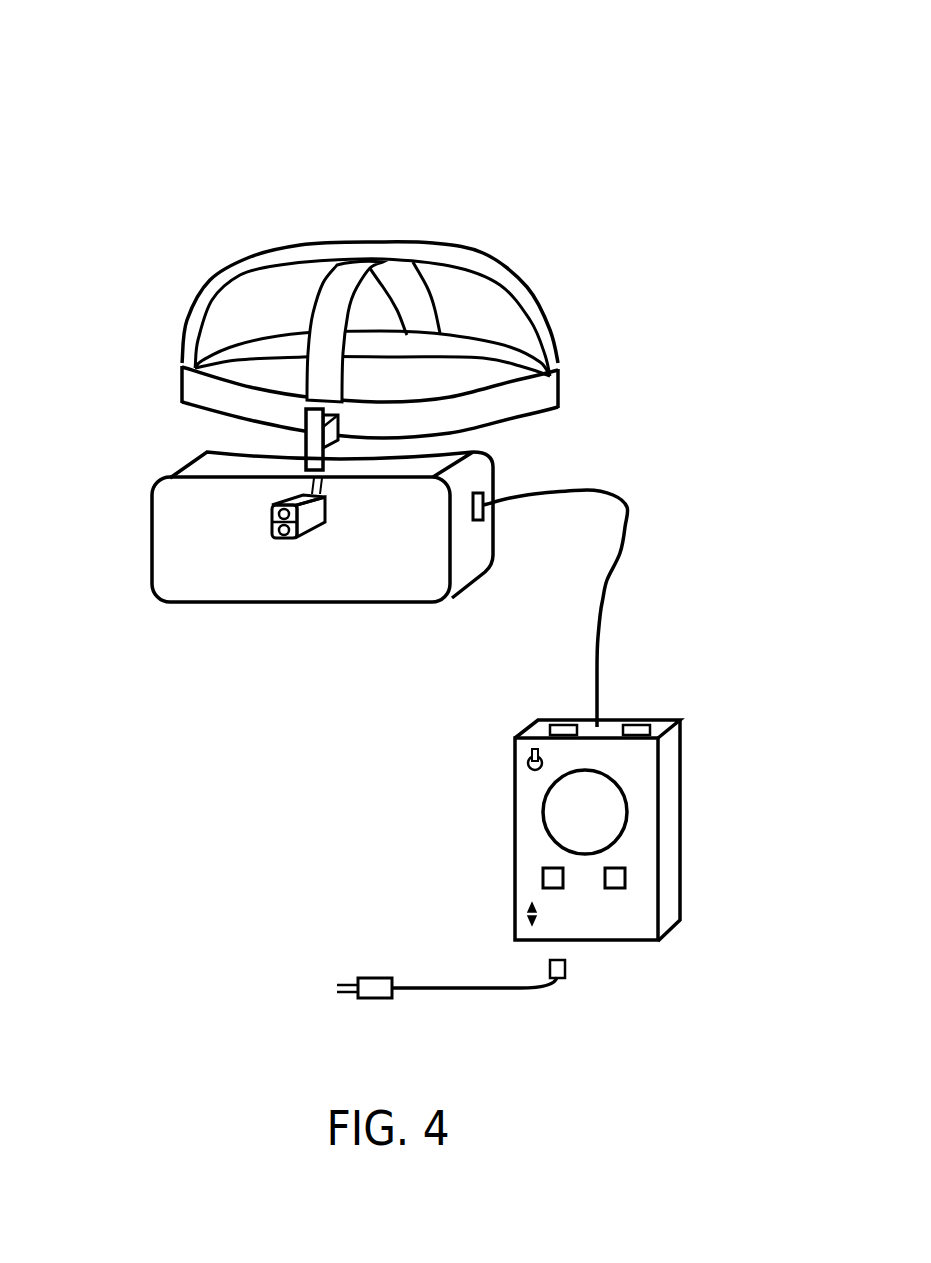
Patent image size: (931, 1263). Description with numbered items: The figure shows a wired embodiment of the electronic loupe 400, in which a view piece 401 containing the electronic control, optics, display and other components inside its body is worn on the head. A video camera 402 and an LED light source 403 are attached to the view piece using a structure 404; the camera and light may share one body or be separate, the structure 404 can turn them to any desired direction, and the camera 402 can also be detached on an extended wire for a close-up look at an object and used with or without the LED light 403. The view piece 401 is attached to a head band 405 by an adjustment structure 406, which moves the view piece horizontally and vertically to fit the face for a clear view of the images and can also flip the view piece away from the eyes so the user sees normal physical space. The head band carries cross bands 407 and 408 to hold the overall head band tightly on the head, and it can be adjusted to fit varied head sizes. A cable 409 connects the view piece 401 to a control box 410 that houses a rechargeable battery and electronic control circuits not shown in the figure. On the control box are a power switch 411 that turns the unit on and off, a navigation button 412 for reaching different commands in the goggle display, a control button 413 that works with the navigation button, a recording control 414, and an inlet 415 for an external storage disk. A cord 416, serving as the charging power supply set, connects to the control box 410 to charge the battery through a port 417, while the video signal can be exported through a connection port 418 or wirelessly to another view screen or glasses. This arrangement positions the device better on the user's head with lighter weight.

The electronic loupe 400 is at (378, 112).
The view piece 401 is at (192, 543).
The video camera 402 is at (282, 536).
The LED light source 403 is at (300, 534).
The structure 404 is at (325, 497).
The head band 405 is at (550, 392).
The adjustment structure 406 is at (332, 427).
The cross band 407 is at (533, 290).
The cross band 408 is at (327, 297).
The cable 409 is at (605, 575).
The control box 410 is at (672, 817).
The power switch 411 is at (527, 763).
The navigation button 412 is at (552, 820).
The control button 413 is at (547, 878).
The recording control 414 is at (620, 878).
The inlet for an external storage disk 415 is at (520, 917).
The cord 416 is at (458, 988).
The port 417 is at (560, 720).
The connection port 418 is at (633, 720).